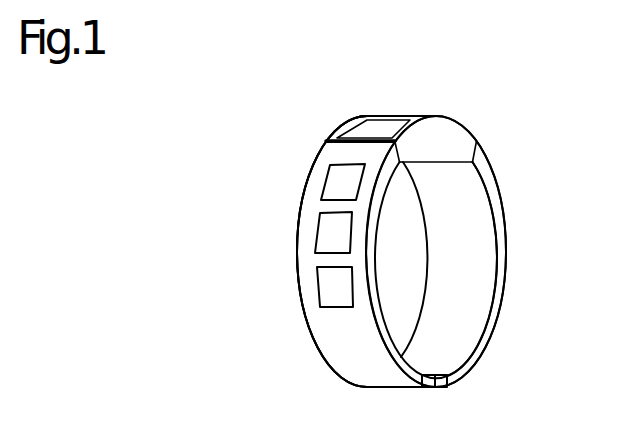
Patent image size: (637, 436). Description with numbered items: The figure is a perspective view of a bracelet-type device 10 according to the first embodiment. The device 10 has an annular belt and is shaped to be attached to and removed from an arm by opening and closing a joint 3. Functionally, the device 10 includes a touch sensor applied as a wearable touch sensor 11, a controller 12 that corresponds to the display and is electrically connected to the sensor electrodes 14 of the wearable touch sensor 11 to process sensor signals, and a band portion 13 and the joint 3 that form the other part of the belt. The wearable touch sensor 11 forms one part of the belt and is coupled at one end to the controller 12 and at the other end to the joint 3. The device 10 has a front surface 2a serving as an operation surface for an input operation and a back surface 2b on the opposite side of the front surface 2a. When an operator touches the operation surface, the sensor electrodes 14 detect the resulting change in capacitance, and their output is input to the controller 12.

The bracelet-type device 10 is at (496, 136).
The wearable touch sensor 11 is at (331, 157).
The controller 12 is at (377, 125).
The band portion 13 is at (505, 263).
The sensor electrodes 14 is at (338, 185).
The front surface 2a is at (345, 338).
The back surface 2b is at (385, 320).
The joint 3 is at (445, 389).